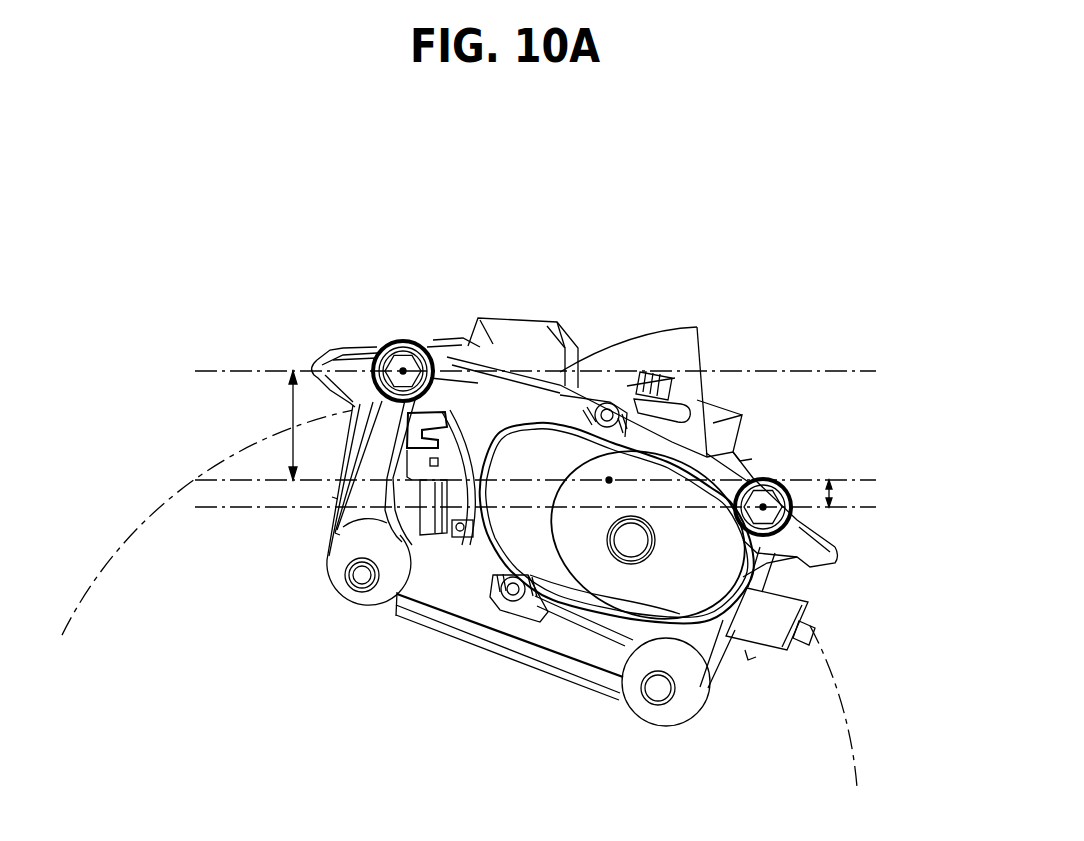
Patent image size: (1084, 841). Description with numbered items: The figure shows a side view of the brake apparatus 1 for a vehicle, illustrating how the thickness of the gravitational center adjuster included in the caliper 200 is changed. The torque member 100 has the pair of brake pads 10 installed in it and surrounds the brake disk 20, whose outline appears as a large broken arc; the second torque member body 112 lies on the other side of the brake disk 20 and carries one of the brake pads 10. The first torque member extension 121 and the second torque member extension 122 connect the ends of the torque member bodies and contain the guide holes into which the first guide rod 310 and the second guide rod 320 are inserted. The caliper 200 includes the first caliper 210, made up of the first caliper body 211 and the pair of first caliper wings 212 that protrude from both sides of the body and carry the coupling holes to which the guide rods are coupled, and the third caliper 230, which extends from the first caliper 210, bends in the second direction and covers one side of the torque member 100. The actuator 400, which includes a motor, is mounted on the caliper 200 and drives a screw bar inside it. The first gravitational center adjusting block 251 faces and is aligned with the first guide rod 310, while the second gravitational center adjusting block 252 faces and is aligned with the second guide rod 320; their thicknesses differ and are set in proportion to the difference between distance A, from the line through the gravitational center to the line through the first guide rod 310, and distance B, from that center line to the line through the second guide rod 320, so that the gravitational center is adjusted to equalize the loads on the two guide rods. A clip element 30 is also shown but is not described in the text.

The brake apparatus 1 is at (913, 153).
The brake pads 10 is at (432, 575).
The brake disk 20 is at (840, 678).
The clip bracket 30 is at (430, 498).
The torque member 100 is at (340, 549).
The second torque member body 112 is at (370, 613).
The first torque member extension 121 is at (403, 342).
The second torque member extension 122 is at (787, 478).
The caliper 200 is at (469, 262).
The first caliper 210 is at (713, 292).
The first caliper body 211 is at (565, 368).
The first caliper wings 212 is at (700, 324).
The third caliper 230 is at (518, 345).
The first gravitational center adjusting block 251 is at (348, 345).
The second gravitational center adjusting block 252 is at (757, 450).
The first guide rod 310 is at (340, 392).
The second guide rod 320 is at (770, 520).
The actuator 400 is at (610, 578).